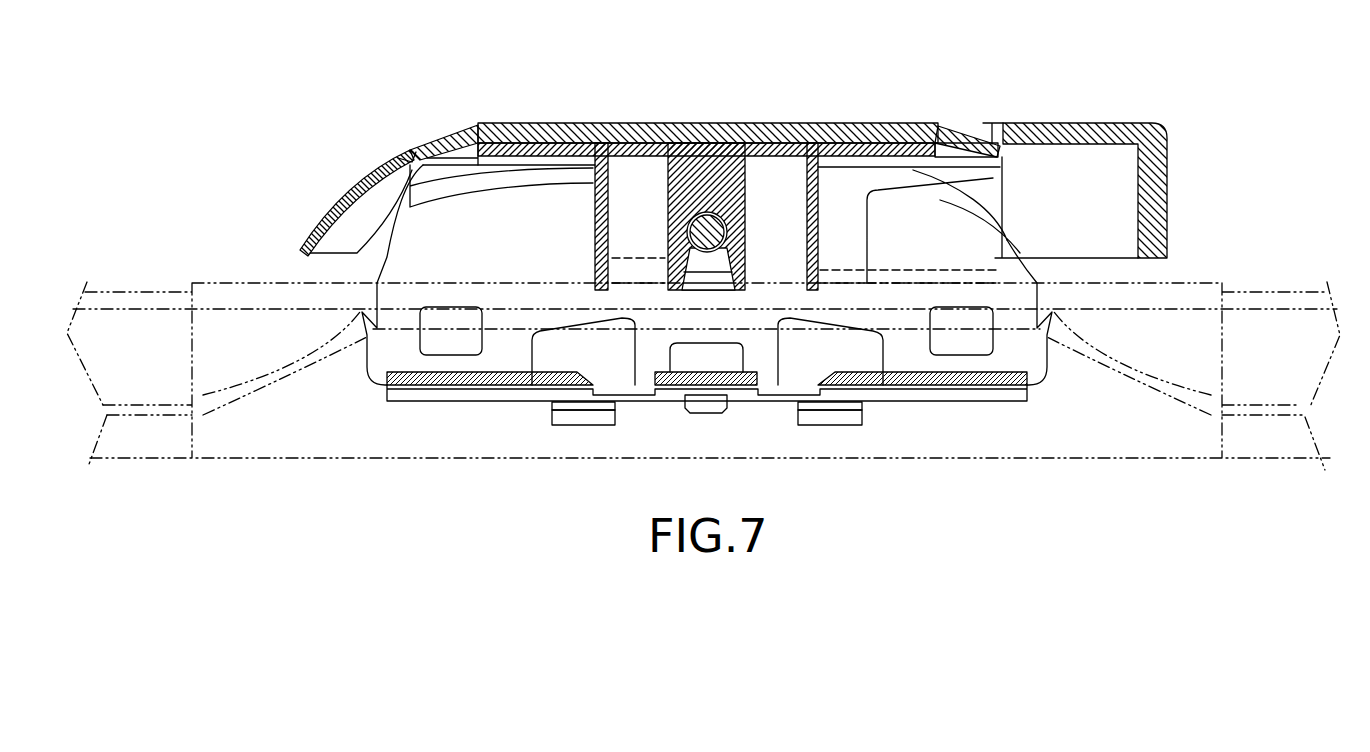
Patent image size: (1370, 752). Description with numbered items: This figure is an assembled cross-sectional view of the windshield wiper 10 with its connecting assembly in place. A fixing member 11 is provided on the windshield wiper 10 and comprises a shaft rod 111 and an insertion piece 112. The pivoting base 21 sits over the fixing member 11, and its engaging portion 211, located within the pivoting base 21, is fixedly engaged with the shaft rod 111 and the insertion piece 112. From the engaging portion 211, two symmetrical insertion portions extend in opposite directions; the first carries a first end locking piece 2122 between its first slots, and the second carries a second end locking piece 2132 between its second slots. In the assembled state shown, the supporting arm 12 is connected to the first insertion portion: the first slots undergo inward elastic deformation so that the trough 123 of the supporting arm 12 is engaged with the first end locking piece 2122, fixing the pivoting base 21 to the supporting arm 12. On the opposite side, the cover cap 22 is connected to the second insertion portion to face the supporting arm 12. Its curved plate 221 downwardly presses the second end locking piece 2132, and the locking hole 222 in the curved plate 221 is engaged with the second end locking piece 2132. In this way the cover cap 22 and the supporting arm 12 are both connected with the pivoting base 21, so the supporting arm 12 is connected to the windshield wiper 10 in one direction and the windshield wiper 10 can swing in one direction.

The windshield wiper 10 is at (1244, 278).
The fixing member 11 is at (998, 445).
The supporting arm 12 is at (1139, 145).
The pivoting base 21 is at (778, 155).
The cover cap 22 is at (300, 167).
The shaft rod 111 is at (705, 233).
The insertion piece 112 is at (497, 223).
The trough 123 is at (983, 128).
The engaging portion 211 is at (750, 220).
The curved plate 221 is at (335, 203).
The locking hole 222 is at (397, 155).
The first end locking piece 2122 is at (970, 140).
The second end locking piece 2132 is at (452, 135).